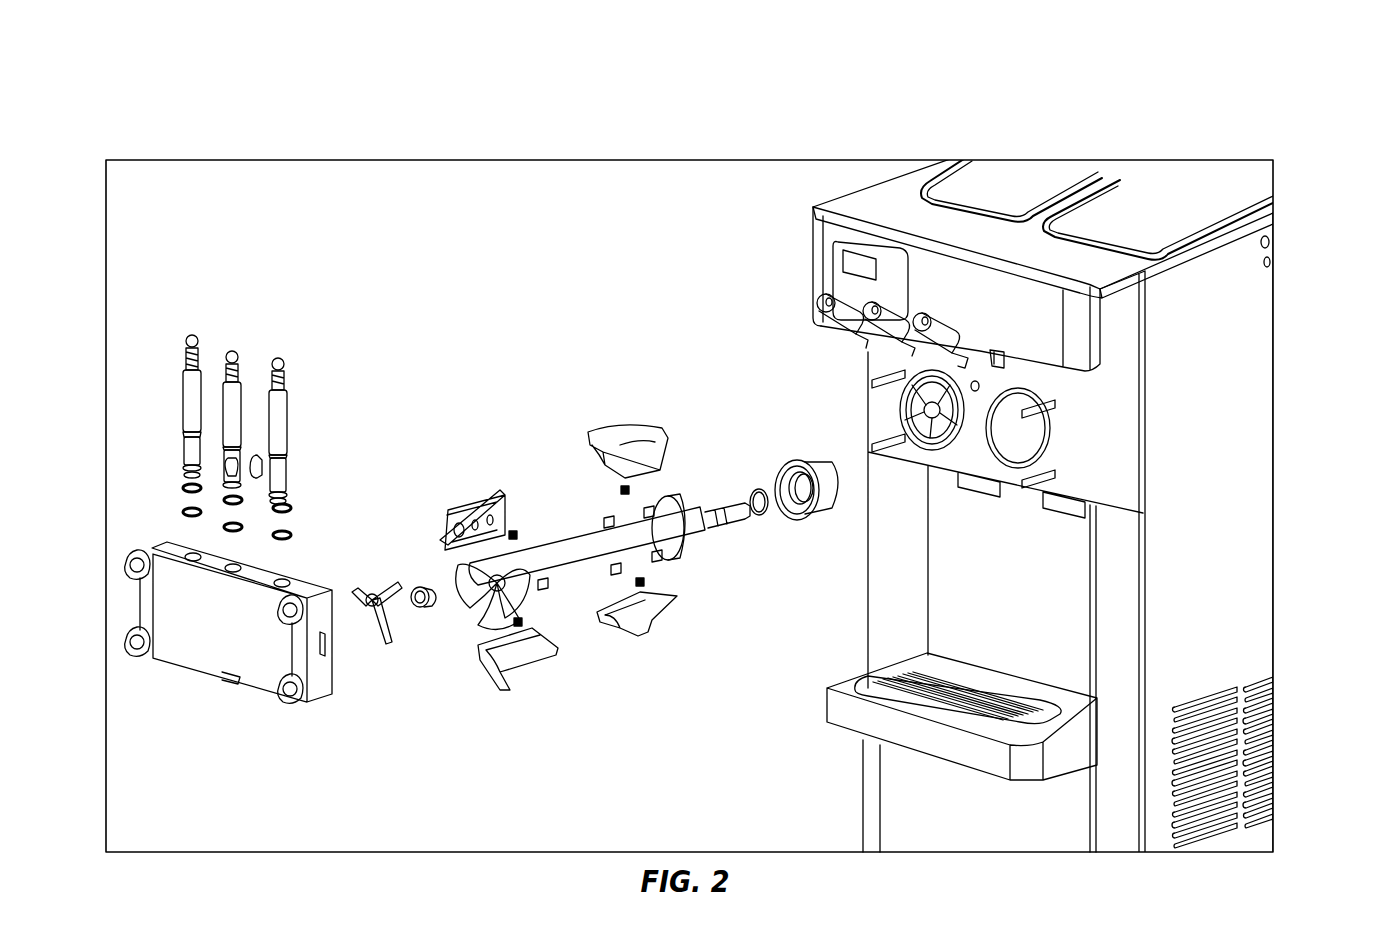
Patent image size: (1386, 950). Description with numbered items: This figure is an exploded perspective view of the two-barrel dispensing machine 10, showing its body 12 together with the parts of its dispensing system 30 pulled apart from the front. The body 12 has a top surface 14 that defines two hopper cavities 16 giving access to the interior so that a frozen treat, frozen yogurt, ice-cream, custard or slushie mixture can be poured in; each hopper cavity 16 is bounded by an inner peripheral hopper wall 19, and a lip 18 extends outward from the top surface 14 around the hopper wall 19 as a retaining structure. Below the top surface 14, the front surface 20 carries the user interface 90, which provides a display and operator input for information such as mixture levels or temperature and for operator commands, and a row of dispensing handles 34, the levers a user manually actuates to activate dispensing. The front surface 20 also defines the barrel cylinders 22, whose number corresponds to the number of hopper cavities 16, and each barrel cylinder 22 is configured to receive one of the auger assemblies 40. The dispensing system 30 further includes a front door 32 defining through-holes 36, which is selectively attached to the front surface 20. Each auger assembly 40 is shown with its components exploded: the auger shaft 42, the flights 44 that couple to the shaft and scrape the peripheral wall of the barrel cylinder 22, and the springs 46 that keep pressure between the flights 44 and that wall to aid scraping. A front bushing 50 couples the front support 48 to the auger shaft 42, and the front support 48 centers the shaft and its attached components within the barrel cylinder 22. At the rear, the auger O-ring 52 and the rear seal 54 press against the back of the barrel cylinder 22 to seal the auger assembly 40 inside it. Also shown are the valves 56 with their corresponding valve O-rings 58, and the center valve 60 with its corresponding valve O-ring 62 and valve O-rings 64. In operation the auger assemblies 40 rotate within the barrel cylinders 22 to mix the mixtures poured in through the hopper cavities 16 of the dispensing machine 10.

The dispensing machine 10 is at (1044, 462).
The body 12 is at (1248, 508).
The top surface 14 is at (890, 205).
The hopper cavities 16 is at (1190, 205).
The lip 18 is at (975, 170).
The hopper wall 19 is at (1035, 175).
The front surface 20 is at (1095, 470).
The barrel cylinders 22 is at (1022, 434).
The dispensing system 30 is at (238, 575).
The front door 32 is at (238, 633).
The dispensing handles 34 is at (935, 338).
The through-holes 36 is at (290, 578).
The auger assemblies 40 is at (598, 345).
The auger shaft 42 is at (565, 555).
The flights 44 is at (478, 500).
The springs 46 is at (514, 528).
The front support 48 is at (388, 650).
The front bushing 50 is at (427, 609).
The auger O-ring 52 is at (760, 518).
The rear seal 54 is at (802, 520).
The valves 56 is at (190, 393).
The valve O-rings 58 is at (180, 512).
The center valve 60 is at (240, 355).
The valve O-ring 62 is at (255, 458).
The valve O-rings 64 is at (244, 527).
The user interface 90 is at (826, 272).